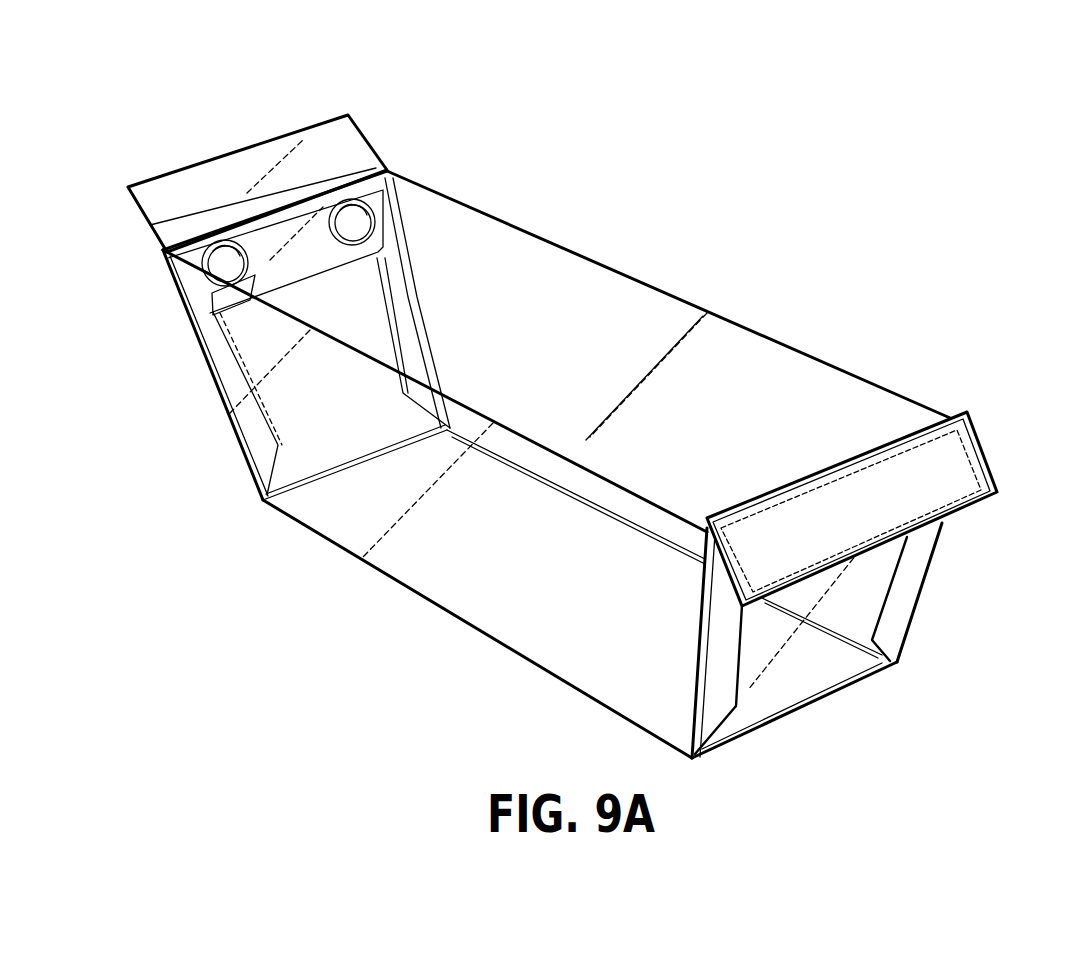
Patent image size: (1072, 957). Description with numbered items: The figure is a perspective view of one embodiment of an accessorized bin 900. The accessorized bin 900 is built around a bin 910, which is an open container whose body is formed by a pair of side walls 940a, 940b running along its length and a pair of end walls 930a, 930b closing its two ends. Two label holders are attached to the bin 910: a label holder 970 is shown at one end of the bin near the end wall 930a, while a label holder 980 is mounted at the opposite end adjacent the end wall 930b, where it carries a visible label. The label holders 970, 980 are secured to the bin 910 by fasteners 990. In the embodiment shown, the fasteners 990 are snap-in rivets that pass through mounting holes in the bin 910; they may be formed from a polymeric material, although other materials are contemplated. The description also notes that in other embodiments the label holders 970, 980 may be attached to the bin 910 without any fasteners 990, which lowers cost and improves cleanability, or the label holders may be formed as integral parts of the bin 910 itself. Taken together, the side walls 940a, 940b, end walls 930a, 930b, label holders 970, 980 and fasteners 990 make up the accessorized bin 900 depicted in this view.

The accessorized bin 900 is at (717, 178).
The bin 910 is at (393, 517).
The end wall 930a is at (348, 317).
The end wall 930b is at (798, 668).
The side wall 940a is at (513, 590).
The side wall 940b is at (727, 410).
The label holder 970 is at (253, 177).
The label holder 980 is at (979, 512).
The fasteners 990 is at (357, 223).